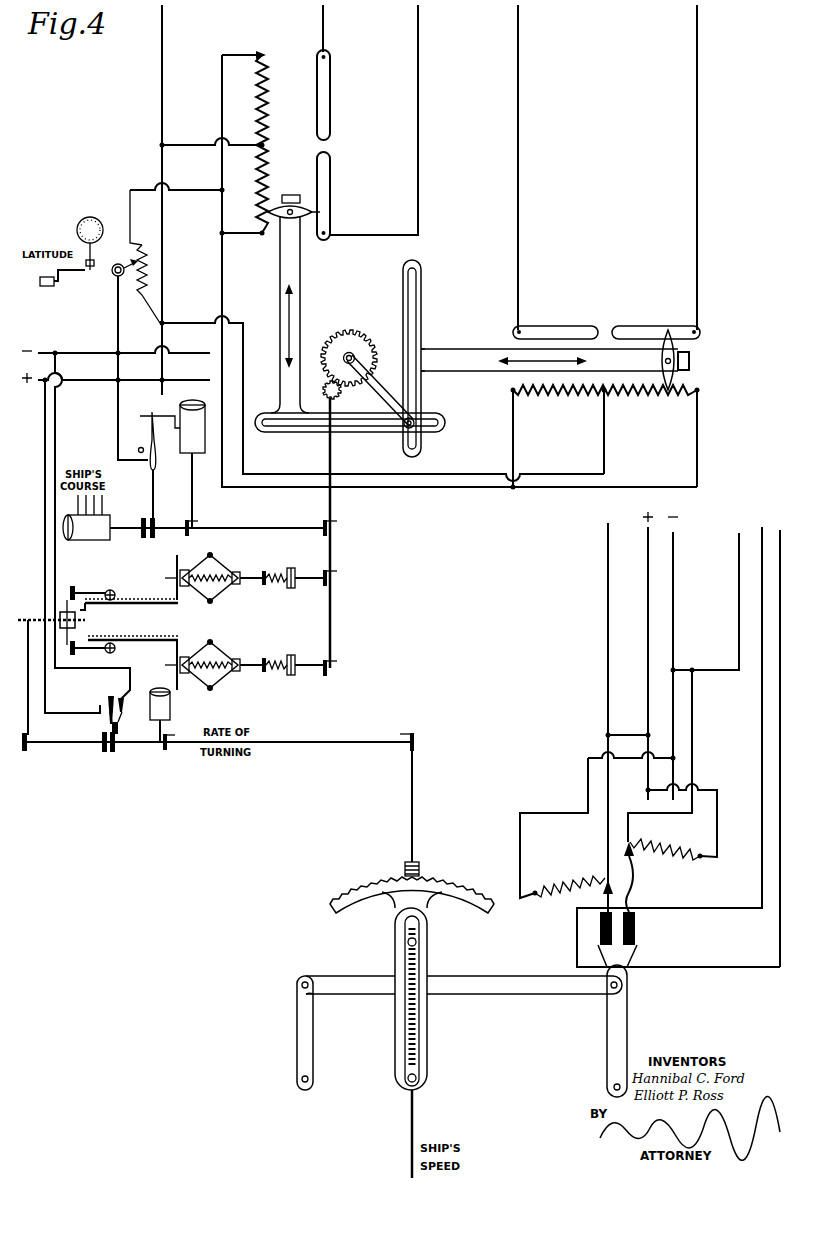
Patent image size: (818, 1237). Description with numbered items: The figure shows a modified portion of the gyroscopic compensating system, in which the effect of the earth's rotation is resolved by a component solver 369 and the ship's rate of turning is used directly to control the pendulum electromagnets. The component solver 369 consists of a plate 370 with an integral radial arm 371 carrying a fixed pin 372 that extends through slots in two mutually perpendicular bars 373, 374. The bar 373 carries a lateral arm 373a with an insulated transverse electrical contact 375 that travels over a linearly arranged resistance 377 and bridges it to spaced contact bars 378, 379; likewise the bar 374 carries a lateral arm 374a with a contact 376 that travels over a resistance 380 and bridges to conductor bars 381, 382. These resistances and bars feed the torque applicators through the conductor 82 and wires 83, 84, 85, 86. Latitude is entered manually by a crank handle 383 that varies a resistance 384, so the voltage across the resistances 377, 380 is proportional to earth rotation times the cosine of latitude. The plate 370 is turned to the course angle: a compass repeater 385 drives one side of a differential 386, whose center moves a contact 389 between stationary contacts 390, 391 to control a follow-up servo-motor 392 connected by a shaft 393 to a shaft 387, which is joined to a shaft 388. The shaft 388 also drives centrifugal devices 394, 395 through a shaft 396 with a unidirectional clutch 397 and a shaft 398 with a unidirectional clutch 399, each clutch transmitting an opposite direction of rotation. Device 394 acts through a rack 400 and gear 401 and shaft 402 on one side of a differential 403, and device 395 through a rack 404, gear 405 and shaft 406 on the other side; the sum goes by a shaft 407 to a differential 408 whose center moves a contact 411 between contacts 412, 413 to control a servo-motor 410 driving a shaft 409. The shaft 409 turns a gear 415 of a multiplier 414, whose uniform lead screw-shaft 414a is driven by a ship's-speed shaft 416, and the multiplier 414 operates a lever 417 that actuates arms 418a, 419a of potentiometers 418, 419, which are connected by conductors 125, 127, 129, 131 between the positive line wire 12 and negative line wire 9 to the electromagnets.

The conductor 82 is at (162, 38).
The wire 85 is at (323, 18).
The wire 86 is at (418, 18).
The conductor 84 is at (518, 18).
The wire 83 is at (697, 18).
The resistance 380 is at (265, 95).
The electrical conductor bar 381 is at (330, 90).
The electrical conductor bar 382 is at (330, 192).
The transverse electrical contact 376 is at (304, 204).
The lateral arm 374a is at (366, 275).
The bar 374 is at (373, 432).
The component solver 369 is at (429, 302).
The plate 370 is at (338, 338).
The radial arm 371 is at (385, 372).
The pin 372 is at (418, 428).
The bar 373 is at (421, 389).
The lateral arm 373a is at (491, 340).
The contact bar 378 is at (560, 325).
The contact bar 379 is at (640, 325).
The transverse electrical contact 375 is at (686, 345).
The resistance 377 is at (650, 395).
The crank handle 383 is at (48, 290).
The resistance 384 is at (137, 271).
The movable electrical contact 389 is at (155, 420).
The stationary contact 390 is at (140, 450).
The stationary contact 391 is at (158, 445).
The follow-up servo-motor 392 is at (200, 392).
The shaft 393 is at (192, 497).
The compass repeater 385 is at (95, 540).
The differential 386 is at (152, 540).
The shaft 387 is at (255, 530).
The shaft 388 is at (331, 508).
The centrifugal device 394 is at (229, 569).
The shaft 396 is at (248, 582).
The unidirectional clutch 397 is at (275, 569).
The centrifugal device 395 is at (229, 653).
The shaft 398 is at (248, 672).
The unidirectional clutch 399 is at (275, 657).
The rack 400 is at (105, 606).
The gear 401 is at (117, 583).
The shaft 402 is at (92, 593).
The differential 403 is at (78, 624).
The rack 404 is at (128, 640).
The gear 405 is at (112, 653).
The shaft 406 is at (80, 650).
The stationary contact 412 is at (105, 698).
The movable contact 411 is at (106, 708).
The follow-up servo-motor 410 is at (172, 710).
The shaft 407 is at (30, 716).
The differential 408 is at (100, 752).
The stationary contact 413 is at (119, 726).
The shaft 409 is at (160, 748).
The gear 415 is at (419, 866).
The multiplier 414 is at (427, 911).
The uniform lead screw-shaft 414a is at (499, 1033).
The shaft 416 is at (410, 1112).
The conductor 131 is at (608, 540).
The positive line wire 12 is at (648, 540).
The negative line wire 9 is at (673, 543).
The conductor 125 is at (739, 533).
The conductor 127 is at (762, 530).
The conductor 129 is at (790, 520).
The potentiometer 418 is at (641, 841).
The arm 418a is at (706, 888).
The potentiometer 419 is at (552, 886).
The arm 419a is at (604, 897).
The lever 417 is at (625, 1013).